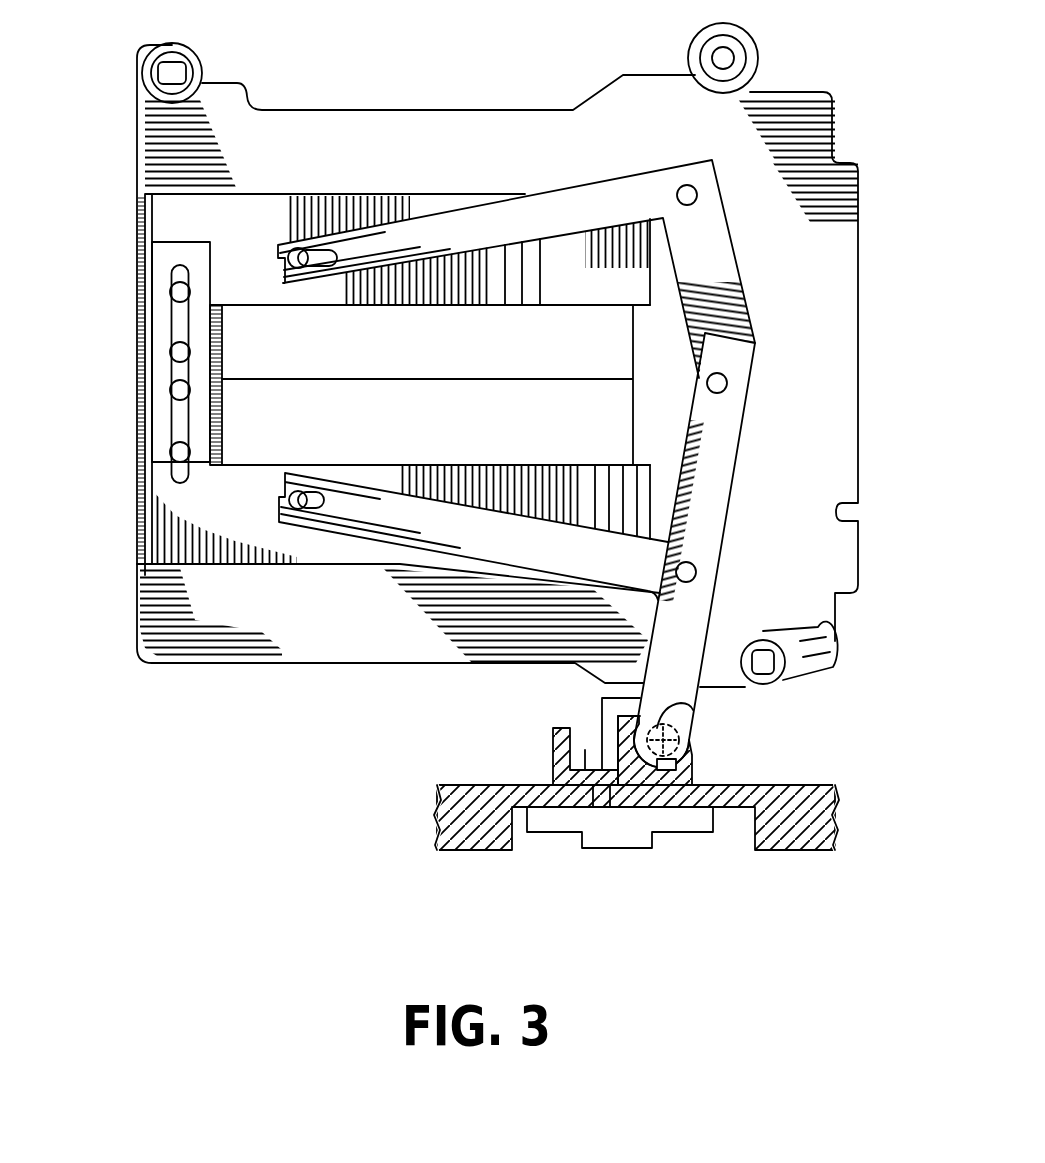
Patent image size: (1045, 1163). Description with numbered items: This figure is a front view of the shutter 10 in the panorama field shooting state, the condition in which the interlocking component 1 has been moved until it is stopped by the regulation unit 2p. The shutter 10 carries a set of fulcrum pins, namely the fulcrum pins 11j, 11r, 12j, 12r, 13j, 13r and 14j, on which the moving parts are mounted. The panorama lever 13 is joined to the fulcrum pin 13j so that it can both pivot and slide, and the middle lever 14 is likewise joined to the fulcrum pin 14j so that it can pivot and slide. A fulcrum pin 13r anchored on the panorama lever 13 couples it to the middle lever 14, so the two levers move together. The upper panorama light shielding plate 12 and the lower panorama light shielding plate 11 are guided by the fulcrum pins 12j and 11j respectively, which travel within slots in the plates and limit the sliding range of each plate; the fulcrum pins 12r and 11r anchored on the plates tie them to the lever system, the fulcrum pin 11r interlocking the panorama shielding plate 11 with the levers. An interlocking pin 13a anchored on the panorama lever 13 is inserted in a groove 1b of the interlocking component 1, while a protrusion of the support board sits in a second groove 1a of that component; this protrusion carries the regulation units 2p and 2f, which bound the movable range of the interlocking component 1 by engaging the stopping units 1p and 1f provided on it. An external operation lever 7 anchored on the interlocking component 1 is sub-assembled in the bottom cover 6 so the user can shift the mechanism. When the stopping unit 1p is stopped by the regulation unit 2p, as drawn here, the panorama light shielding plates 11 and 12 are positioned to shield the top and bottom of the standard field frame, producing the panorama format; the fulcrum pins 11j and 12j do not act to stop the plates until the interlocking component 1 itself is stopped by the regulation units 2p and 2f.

The shutter 10 is at (800, 243).
The panorama light shielding plate 11 is at (207, 513).
The fulcrum pin 11j is at (172, 352).
The fulcrum pin 11r is at (295, 506).
The panorama light shielding plate 12 is at (318, 222).
The fulcrum pin 12j is at (172, 292).
The fulcrum pin 12r is at (290, 256).
The panorama lever 13 is at (732, 455).
The interlocking pin 13a is at (683, 740).
The fulcrum pin 13j is at (698, 574).
The fulcrum pin 13r is at (728, 385).
The middle lever 14 is at (547, 212).
The fulcrum pin 14j is at (694, 193).
The interlocking component 1 is at (684, 786).
The groove 1a is at (585, 752).
The groove 1b is at (683, 705).
The stopping unit 1f is at (553, 732).
The stopping unit 1p is at (660, 775).
The regulation unit 2f is at (600, 702).
The regulation unit 2p is at (608, 790).
The bottom cover 6 is at (478, 830).
The external operation lever 7 is at (630, 845).